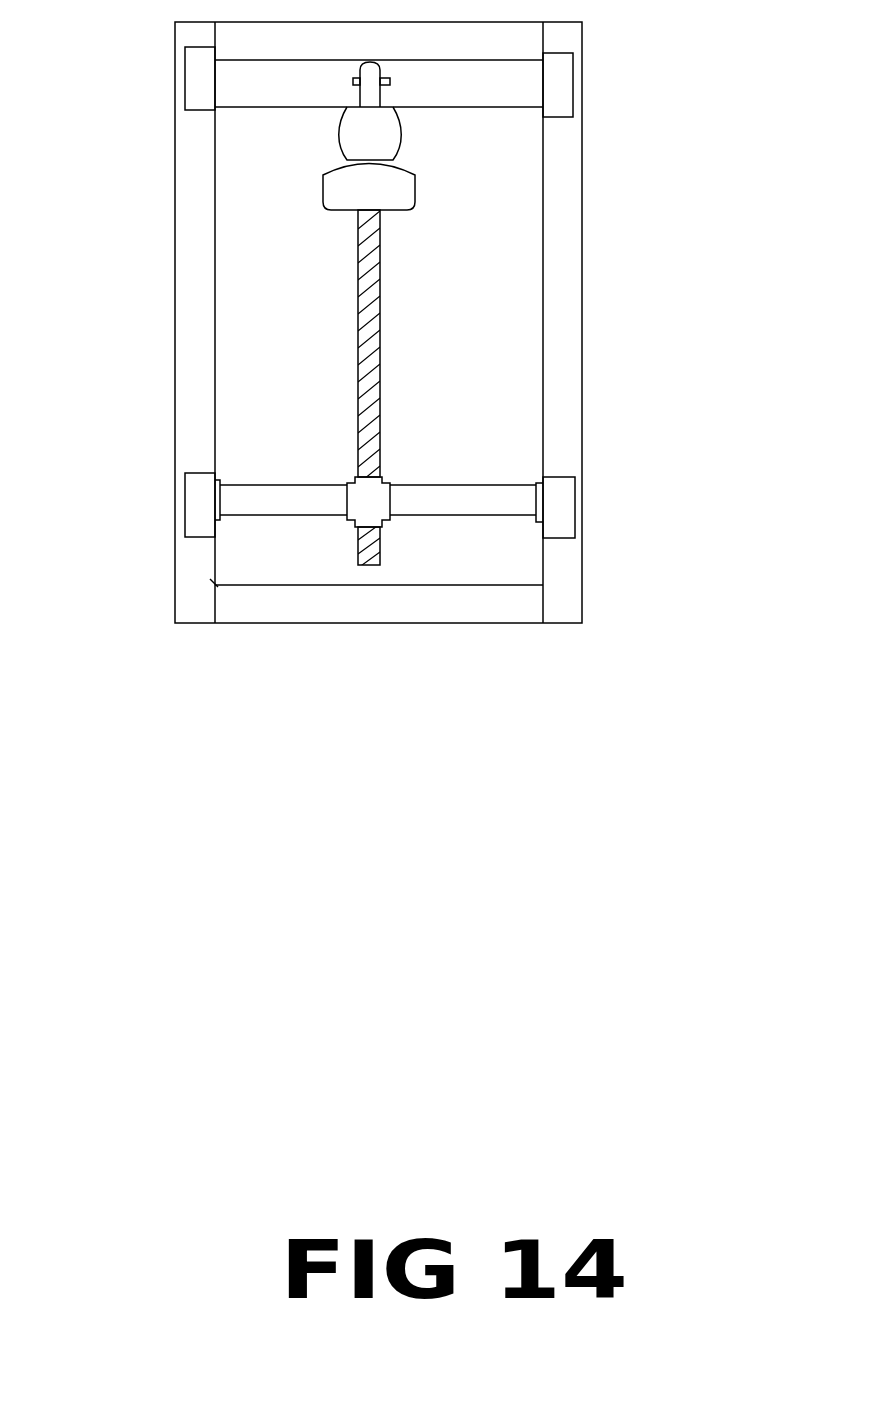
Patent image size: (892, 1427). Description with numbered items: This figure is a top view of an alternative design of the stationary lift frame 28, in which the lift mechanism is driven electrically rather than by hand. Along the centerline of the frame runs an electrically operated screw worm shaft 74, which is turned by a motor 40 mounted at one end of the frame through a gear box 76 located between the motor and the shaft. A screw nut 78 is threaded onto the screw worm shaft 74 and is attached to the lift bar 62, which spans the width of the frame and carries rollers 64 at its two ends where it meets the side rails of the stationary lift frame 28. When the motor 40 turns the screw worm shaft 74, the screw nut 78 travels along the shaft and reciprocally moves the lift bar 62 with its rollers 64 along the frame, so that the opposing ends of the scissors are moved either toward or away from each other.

The stationary lift frame 28 is at (172, 300).
The motor 40 is at (397, 127).
The lift bar 62 is at (303, 487).
The rollers 64 is at (220, 478).
The screw worm shaft 74 is at (380, 313).
The gear box 76 is at (323, 197).
The screw nut 78 is at (387, 500).